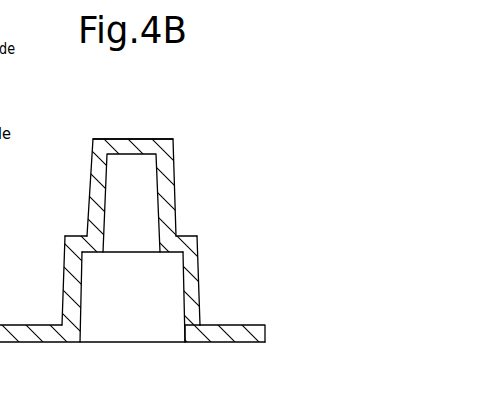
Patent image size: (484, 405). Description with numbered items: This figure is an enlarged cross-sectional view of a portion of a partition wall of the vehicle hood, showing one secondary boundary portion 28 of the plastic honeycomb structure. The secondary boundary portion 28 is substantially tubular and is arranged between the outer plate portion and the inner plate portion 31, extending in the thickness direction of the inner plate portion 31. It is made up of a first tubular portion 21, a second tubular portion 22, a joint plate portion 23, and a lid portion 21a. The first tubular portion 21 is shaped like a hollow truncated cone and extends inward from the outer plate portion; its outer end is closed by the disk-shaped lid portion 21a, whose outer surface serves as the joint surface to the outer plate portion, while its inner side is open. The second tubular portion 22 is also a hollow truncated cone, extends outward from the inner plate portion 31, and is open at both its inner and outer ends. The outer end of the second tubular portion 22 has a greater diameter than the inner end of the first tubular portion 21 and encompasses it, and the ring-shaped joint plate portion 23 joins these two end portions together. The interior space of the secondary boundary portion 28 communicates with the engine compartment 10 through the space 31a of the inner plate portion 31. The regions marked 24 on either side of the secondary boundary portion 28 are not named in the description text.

The engine compartment 10 is at (139, 388).
The first tubular portion 21 is at (175, 190).
The lid portion 21a is at (135, 138).
The second tubular portion 22 is at (197, 297).
The joint plate portion 23 is at (188, 235).
The space 24 is at (58, 176).
The secondary boundary portion 28 is at (177, 117).
The inner plate portion 31 is at (230, 337).
The space of the inner plate portion 31a is at (185, 325).